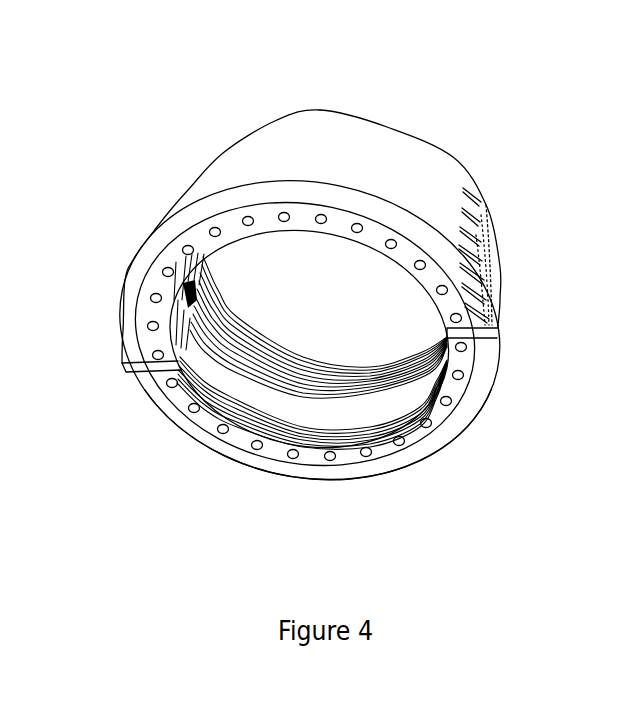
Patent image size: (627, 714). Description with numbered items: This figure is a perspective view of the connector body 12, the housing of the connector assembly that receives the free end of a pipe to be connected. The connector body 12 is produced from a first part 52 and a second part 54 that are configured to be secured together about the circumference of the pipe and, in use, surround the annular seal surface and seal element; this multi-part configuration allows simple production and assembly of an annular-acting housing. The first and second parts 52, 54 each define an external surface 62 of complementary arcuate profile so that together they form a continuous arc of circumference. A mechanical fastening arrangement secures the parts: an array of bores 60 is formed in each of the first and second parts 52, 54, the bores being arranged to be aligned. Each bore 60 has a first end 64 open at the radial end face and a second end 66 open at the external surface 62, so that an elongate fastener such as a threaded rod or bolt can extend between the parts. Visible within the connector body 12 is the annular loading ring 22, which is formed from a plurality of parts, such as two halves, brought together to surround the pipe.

The connector body 12 is at (388, 140).
The annular loading ring 22 is at (278, 458).
The first part 52 is at (248, 120).
The second part 54 is at (444, 440).
The bores 60 is at (463, 190).
The external surface 62 is at (418, 162).
The first end 64 is at (481, 334).
The second end 66 is at (484, 227).